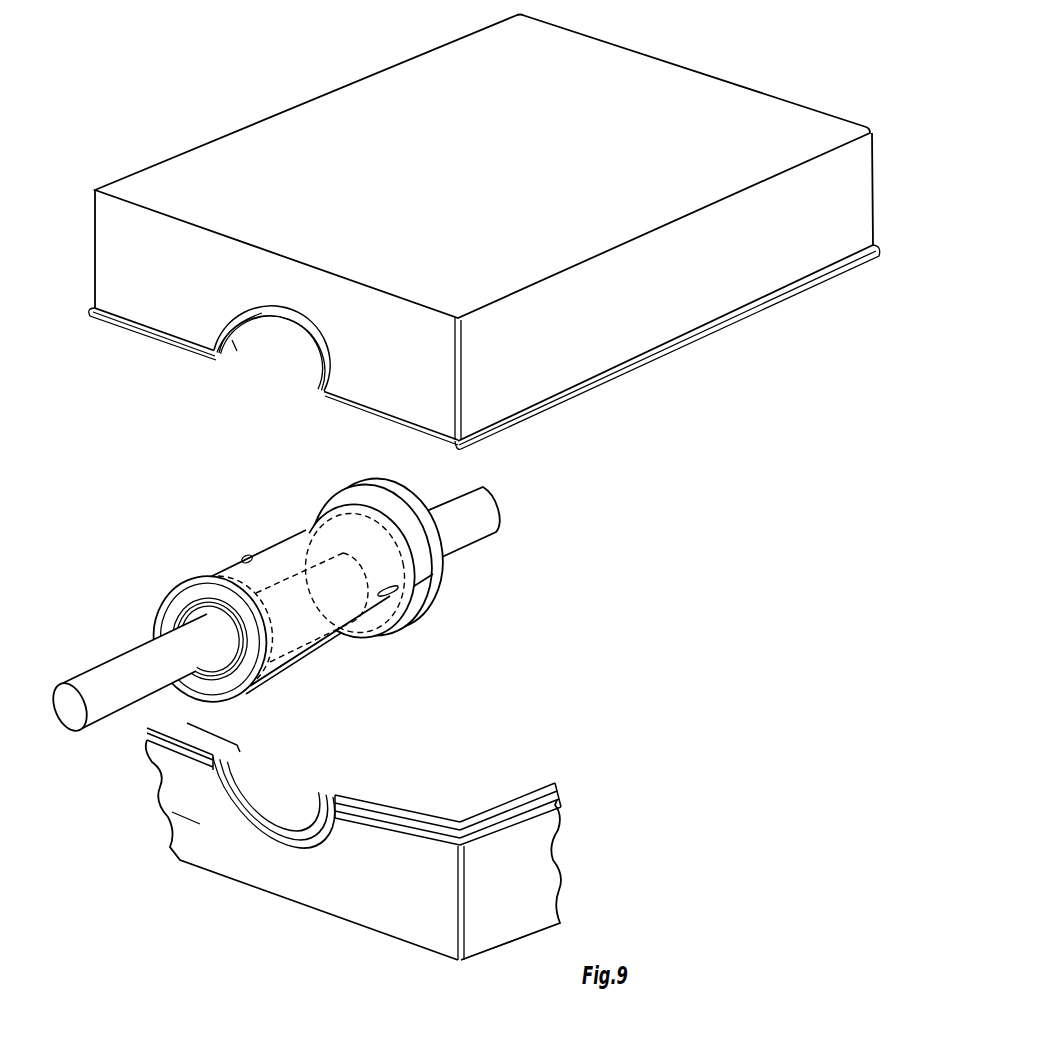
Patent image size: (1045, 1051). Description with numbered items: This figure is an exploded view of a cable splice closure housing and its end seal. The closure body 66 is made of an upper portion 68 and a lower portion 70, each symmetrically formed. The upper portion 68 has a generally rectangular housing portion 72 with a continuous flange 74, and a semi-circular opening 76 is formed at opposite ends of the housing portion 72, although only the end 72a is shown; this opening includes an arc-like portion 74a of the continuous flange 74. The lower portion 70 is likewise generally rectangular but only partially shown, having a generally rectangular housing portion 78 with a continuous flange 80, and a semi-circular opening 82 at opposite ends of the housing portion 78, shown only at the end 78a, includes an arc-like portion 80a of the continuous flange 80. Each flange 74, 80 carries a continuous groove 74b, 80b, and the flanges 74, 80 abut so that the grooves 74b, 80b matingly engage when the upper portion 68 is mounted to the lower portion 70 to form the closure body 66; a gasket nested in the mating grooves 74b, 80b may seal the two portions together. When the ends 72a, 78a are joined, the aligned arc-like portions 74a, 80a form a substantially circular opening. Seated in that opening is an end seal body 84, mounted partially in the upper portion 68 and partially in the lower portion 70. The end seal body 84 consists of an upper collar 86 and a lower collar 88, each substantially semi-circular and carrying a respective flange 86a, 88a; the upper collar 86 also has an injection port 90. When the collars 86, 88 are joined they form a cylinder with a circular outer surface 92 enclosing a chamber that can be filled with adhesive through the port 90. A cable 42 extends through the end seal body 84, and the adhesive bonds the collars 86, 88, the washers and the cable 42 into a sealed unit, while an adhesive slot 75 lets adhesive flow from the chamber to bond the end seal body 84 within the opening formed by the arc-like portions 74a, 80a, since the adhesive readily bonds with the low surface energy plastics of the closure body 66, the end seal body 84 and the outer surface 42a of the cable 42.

The closure body 66 is at (224, 87).
The upper portion 68 is at (733, 278).
The lower portion 70 is at (495, 935).
The housing portion 72 is at (697, 70).
The end 72a is at (115, 249).
The continuous flange 74 is at (484, 347).
The arc-like portion 74a is at (222, 330).
The continuous groove 74b is at (228, 348).
The semi-circular opening 76 is at (318, 357).
The housing portion 78 is at (281, 876).
The end 78a is at (173, 820).
The continuous flange 80 is at (376, 820).
The arc-like portion 80a is at (253, 830).
The continuous groove 80b is at (533, 796).
The semi-circular opening 82 is at (293, 787).
The end seal body 84 is at (168, 570).
The upper collar 86 is at (275, 540).
The flange 86a is at (383, 486).
The lower collar 88 is at (338, 615).
The flange 88a is at (390, 641).
The injection port 90 is at (246, 556).
The circular outer surface 92 is at (223, 563).
The adhesive slot 75 is at (393, 602).
The cable 42 is at (495, 495).
The outer surface 42a is at (87, 670).